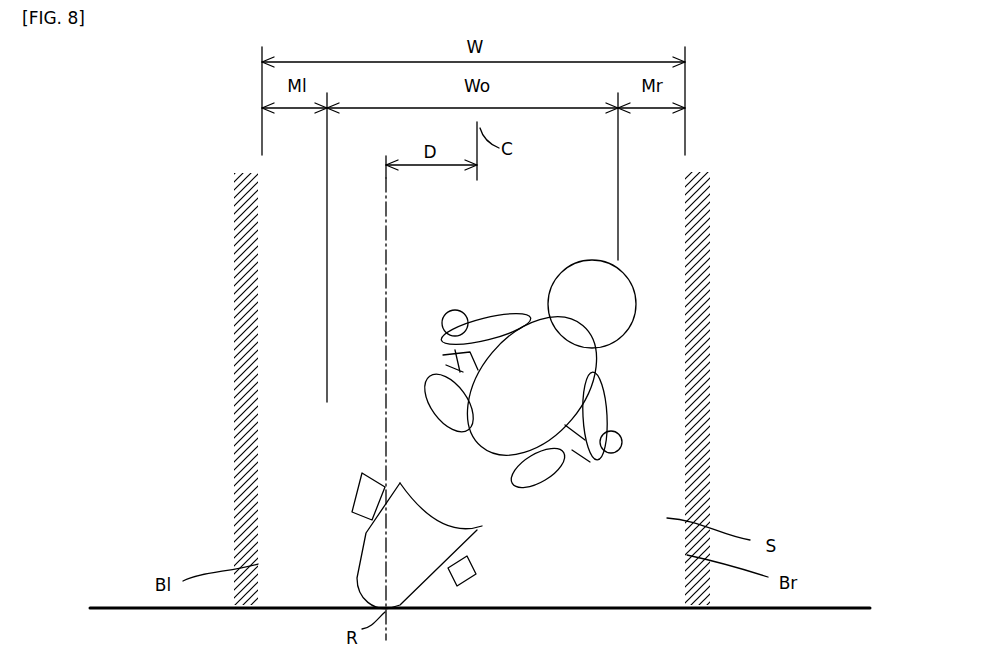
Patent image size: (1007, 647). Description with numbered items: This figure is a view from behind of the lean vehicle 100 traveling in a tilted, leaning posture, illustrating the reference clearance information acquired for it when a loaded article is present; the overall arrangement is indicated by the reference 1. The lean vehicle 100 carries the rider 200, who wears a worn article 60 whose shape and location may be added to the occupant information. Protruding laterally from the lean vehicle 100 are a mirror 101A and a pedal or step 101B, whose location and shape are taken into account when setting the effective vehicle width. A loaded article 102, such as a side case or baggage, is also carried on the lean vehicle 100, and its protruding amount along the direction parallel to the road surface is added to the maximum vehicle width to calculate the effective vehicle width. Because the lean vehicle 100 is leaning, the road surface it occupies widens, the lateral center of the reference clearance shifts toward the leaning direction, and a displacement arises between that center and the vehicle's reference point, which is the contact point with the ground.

The vehicle monitoring system 1 is at (230, 146).
The worn article 60 is at (612, 303).
The lean vehicle 100 is at (638, 548).
The mirror 101A is at (618, 447).
The pedal or step 101B is at (350, 503).
The loaded article 102 is at (343, 432).
The rider 200 is at (570, 370).